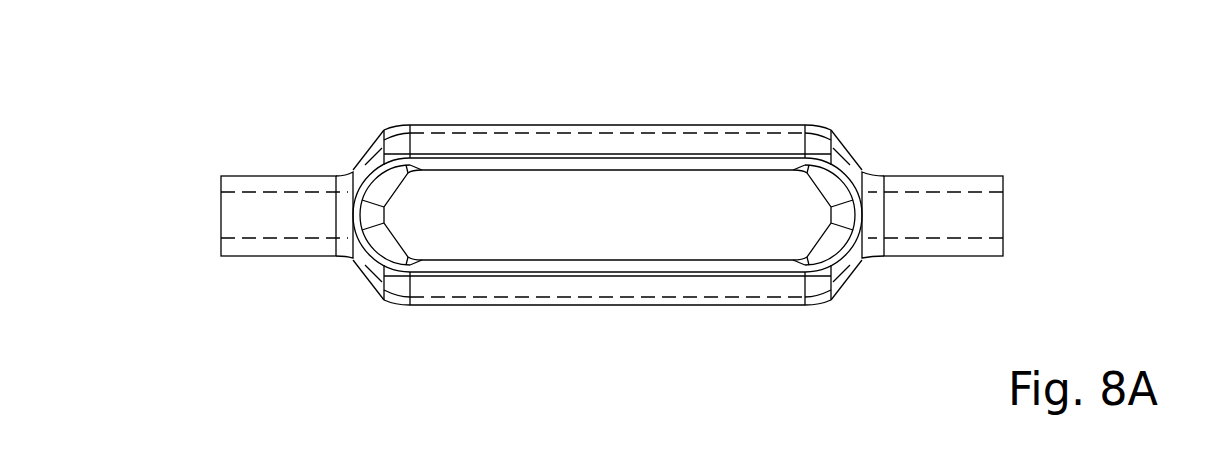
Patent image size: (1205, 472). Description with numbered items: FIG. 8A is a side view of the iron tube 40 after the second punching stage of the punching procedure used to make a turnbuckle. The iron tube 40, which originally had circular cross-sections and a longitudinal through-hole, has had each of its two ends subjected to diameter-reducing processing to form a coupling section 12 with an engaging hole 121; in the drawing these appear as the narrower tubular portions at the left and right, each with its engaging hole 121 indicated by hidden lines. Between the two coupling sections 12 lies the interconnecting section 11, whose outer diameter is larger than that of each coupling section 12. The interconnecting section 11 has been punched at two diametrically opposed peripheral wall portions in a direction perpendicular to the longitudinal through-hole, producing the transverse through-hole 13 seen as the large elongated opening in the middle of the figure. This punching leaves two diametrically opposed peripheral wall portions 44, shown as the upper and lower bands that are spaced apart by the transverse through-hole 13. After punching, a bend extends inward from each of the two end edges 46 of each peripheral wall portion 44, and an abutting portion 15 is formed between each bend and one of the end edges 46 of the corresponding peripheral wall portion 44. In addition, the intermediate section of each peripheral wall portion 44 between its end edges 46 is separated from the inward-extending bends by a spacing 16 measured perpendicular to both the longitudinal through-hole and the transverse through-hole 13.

The interconnecting section 11 is at (613, 132).
The coupling section 12 is at (261, 182).
The engaging hole 121 is at (260, 238).
The transverse through-hole 13 is at (460, 193).
The abutting portion 15 is at (553, 168).
The spacing 16 is at (551, 455).
The iron tube 40 is at (364, 316).
The peripheral wall portion 44 is at (687, 124).
The end edge 46 is at (777, 154).